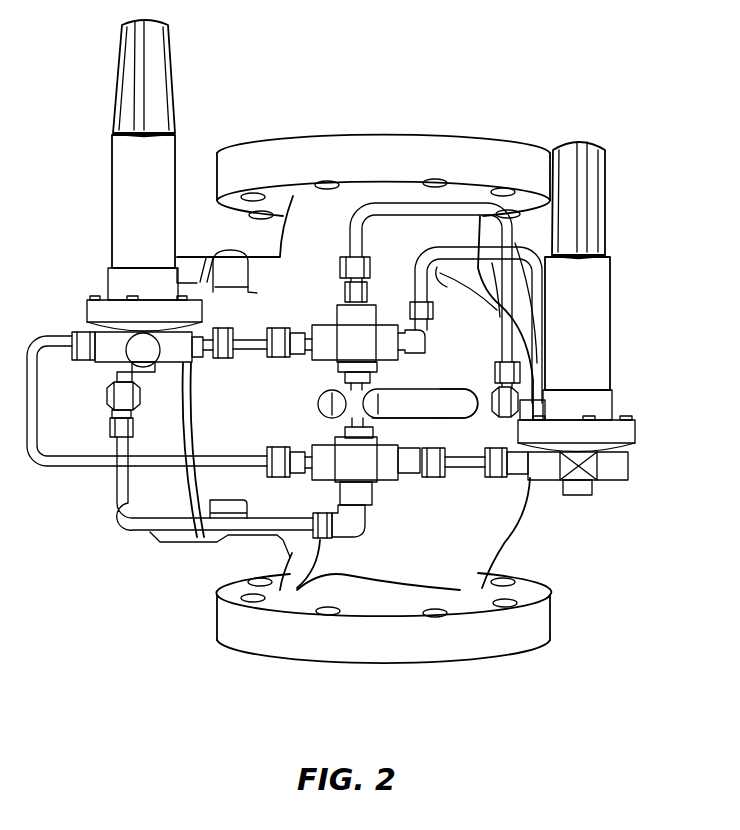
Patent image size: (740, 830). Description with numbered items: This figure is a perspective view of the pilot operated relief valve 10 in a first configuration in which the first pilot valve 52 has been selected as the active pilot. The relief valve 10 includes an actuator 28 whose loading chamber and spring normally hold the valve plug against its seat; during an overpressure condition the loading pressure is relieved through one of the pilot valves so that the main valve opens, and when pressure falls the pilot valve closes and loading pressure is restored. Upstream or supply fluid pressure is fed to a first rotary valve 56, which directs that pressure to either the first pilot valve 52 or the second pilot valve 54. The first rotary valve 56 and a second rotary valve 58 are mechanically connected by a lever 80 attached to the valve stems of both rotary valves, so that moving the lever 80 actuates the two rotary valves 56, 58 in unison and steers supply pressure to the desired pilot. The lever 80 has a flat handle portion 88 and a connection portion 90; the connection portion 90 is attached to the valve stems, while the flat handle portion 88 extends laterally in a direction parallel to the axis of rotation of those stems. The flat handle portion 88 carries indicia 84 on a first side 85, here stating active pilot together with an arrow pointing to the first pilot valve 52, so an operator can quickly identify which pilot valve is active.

The pilot operated relief valve 10 is at (590, 537).
The actuator 28 is at (108, 476).
The first pilot valve 52 is at (626, 285).
The second pilot valve 54 is at (100, 213).
The first rotary valve 56 is at (332, 318).
The second rotary valve 58 is at (379, 488).
The lever 80 is at (456, 425).
The indicia 84 is at (458, 405).
The first side 85 is at (395, 400).
The flat handle portion 88 is at (397, 419).
The connection portion 90 is at (345, 396).